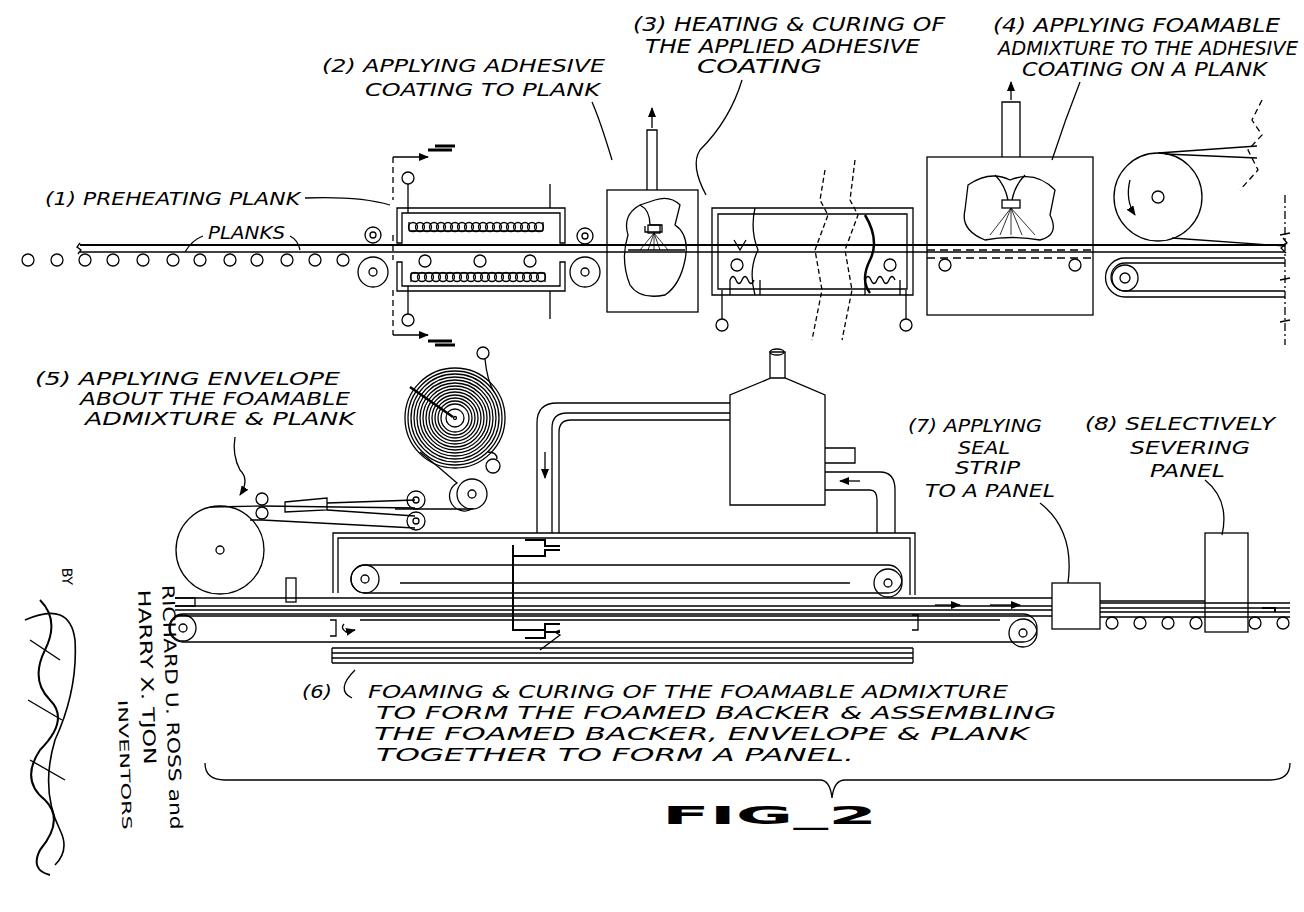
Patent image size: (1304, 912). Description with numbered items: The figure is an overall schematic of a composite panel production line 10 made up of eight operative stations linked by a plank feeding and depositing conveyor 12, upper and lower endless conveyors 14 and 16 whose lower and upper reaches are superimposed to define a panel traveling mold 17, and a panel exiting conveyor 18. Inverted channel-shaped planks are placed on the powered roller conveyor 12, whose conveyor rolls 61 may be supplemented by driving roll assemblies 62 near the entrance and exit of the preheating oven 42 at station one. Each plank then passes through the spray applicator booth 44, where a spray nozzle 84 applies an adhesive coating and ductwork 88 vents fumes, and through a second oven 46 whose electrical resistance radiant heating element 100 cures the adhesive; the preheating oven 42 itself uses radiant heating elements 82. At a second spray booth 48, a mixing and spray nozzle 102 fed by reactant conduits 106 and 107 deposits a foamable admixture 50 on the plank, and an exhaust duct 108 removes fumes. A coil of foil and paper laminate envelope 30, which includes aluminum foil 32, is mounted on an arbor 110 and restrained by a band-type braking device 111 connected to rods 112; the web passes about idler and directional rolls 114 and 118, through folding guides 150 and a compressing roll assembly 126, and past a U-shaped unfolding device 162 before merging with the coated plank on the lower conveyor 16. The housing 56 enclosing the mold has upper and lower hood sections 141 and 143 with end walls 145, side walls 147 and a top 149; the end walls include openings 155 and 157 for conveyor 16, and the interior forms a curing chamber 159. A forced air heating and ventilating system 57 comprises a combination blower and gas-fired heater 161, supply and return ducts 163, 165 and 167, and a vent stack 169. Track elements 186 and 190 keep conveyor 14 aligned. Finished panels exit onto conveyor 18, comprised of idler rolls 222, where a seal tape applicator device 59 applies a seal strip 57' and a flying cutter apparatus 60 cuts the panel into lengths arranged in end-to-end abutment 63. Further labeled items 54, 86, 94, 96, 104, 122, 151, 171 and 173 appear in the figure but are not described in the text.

The production line 10 is at (270, 120).
The plank feeding and depositing conveyor 12 is at (225, 268).
The upper endless conveyor 14 is at (745, 560).
The lower endless conveyor 16 is at (1212, 298).
The panel traveling mold 17 is at (364, 632).
The panel exiting conveyor 18 is at (1170, 635).
The envelope 30 is at (425, 490).
The aluminum foil 32 is at (430, 377).
The preheating oven 42 is at (472, 200).
The spray applicator booth 44 is at (665, 318).
The second oven 46 is at (780, 200).
The second spray booth 48 is at (1028, 318).
The foamable admixture 50 is at (1145, 245).
The heating unit / blower 54 is at (850, 432).
The housing 56 is at (345, 548).
The forced air heating and ventilating system 57 is at (633, 456).
The seal strip 57' is at (1152, 584).
The seal tape applicator device 59 is at (1085, 650).
The flying cutter apparatus 60 is at (1250, 572).
The conveyor roll 61 is at (113, 267).
The driving roll assemblies 62 is at (362, 275).
The end-to-end abutment 63 is at (258, 265).
The electrical resistance radiant heating elements 82 is at (414, 184).
The spray nozzle 84 is at (672, 225).
The adhesive spray nozzle 86 is at (650, 210).
The ductwork 88 is at (658, 145).
The foamable admixture supply 94 is at (920, 240).
The plank with adhesive in oven 96 is at (760, 240).
The electrical resistance radiant heating element 100 is at (728, 322).
The mixing and spray nozzle 102 is at (1025, 210).
The admixture supply line 104 is at (1020, 200).
The conduit 106 is at (995, 178).
The conduit 107 is at (1028, 176).
The exhaust duct 108 is at (1005, 130).
The arbor 110 is at (412, 388).
The band-type braking device 111 is at (497, 388).
The rods 112 is at (489, 353).
The idler and directional roll 114 is at (486, 496).
The flanged guide roll 118 is at (1150, 175).
The envelope feed path 122 is at (425, 522).
The roll assembly 126 is at (272, 500).
The upper hood section 141 is at (740, 545).
The lower hood section 143 is at (555, 660).
The end walls 145 is at (350, 570).
The side walls 147 is at (665, 545).
The top 149 is at (568, 535).
The folding guides 150 is at (310, 512).
The lower oven housing 151 is at (838, 665).
The opening 155 is at (330, 612).
The opening 157 is at (250, 650).
The curing chamber 159 is at (618, 555).
The combination forced air blower and gas-fired heater 161 is at (795, 459).
The U-shaped unfolding device 162 is at (280, 580).
The supply duct 163 is at (628, 420).
The return duct 165 is at (875, 522).
The duct 167 is at (856, 455).
The vent stack 169 is at (786, 362).
The belt rollers 171 is at (1128, 294).
The belt backing plates 173 is at (898, 586).
The track elements 186 is at (790, 645).
The track elements 190 is at (620, 585).
The idler rolls 222 is at (1275, 636).